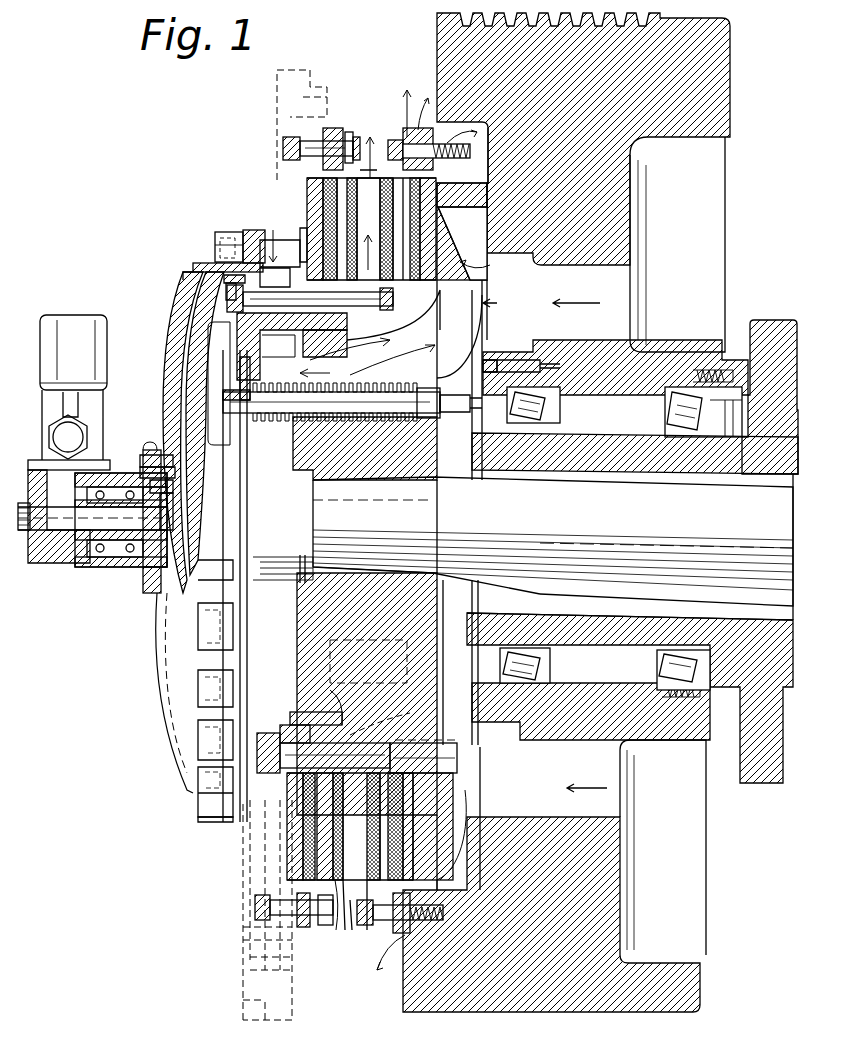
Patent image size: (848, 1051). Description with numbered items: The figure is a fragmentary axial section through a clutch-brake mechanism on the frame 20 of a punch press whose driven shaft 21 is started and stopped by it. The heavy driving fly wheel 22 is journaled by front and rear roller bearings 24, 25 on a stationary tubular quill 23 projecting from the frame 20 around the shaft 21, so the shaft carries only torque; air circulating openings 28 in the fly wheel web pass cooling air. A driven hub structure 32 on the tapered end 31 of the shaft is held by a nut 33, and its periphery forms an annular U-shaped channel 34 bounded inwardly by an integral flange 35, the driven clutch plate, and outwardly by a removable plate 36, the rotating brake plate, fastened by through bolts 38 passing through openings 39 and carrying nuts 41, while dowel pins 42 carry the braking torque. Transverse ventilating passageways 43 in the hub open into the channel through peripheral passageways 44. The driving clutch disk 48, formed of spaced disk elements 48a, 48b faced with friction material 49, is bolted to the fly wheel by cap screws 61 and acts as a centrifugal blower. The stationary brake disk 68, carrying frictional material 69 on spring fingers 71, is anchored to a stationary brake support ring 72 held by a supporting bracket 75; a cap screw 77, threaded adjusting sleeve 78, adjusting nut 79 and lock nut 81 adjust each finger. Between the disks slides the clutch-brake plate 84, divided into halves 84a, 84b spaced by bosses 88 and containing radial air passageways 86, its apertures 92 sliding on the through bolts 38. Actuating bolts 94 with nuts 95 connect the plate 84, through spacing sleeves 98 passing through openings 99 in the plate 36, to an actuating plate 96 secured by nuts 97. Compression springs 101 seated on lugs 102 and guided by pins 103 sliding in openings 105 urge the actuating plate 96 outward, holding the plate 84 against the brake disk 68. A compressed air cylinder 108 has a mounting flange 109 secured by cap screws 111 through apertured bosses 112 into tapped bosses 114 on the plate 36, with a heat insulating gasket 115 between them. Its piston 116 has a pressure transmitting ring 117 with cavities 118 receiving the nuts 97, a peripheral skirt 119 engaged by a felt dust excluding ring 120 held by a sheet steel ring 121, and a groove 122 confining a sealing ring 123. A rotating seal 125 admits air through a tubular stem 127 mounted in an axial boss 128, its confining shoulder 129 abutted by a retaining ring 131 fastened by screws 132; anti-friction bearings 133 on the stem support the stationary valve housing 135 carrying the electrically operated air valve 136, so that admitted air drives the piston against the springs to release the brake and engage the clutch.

The frame 20 is at (776, 320).
The driven shaft 21 is at (745, 553).
The driving fly wheel 22 is at (715, 78).
The stationary tubular quill 23 is at (633, 472).
The front roller bearing 24 is at (548, 422).
The rear roller bearing 25 is at (690, 438).
The air circulating openings 28 is at (615, 297).
The tapered end 31 is at (383, 530).
The driven hub structure 32 is at (315, 620).
The nut 33 is at (305, 560).
The annular U-shaped channel 34 is at (118, 567).
The annular flange 35 is at (470, 205).
The removable annular plate 36 is at (315, 185).
The through bolts 38 is at (323, 753).
The openings 39 is at (240, 802).
The nuts 41 is at (283, 735).
The dowel pins 42 is at (298, 720).
The transverse ventilating passageways 43 is at (443, 374).
The peripheral passageway 44 is at (313, 373).
The driving clutch disk 48 is at (440, 212).
The disk element 48a is at (405, 180).
The disk element 48b is at (440, 195).
The friction material 49 is at (446, 240).
The cap screws 61 is at (393, 140).
The stationary brake disk 68 is at (330, 195).
The frictional material 69 is at (350, 210).
The spring fingers 71 is at (357, 137).
The stationary brake support ring 72 is at (282, 115).
The supporting bracket 75 is at (243, 1000).
The cap screw 77 is at (290, 140).
The threaded adjusting sleeve 78 is at (349, 132).
The adjusting nut 79 is at (330, 128).
The lock nut 81 is at (375, 141).
The clutch-brake plate 84 is at (357, 372).
The plate half 84a is at (330, 690).
The plate half 84b is at (392, 710).
The radially extending passageways 86 is at (370, 229).
The bosses 88 is at (350, 922).
The apertures 92 is at (423, 758).
The actuating bolts 94 is at (270, 330).
The nuts 95 is at (396, 340).
The actuating plate 96 is at (240, 352).
The nuts 97 is at (230, 305).
The spacing sleeves 98 is at (262, 345).
The openings 99 is at (283, 248).
The compression springs 101 is at (263, 415).
The flanges or lugs 102 is at (445, 405).
The guide pins 103 is at (270, 422).
The openings 105 is at (235, 390).
The cylinder 108 is at (186, 352).
The peripheral mounting flange 109 is at (232, 232).
The cap screws 111 is at (218, 236).
The apertured bosses 112 is at (215, 245).
The tapped bosses 114 is at (300, 236).
The heat insulating gasket 115 is at (255, 230).
The piston 116 is at (165, 375).
The pressure transmitting ring 117 is at (208, 327).
The cavities 118 is at (227, 298).
The peripheral skirt 119 is at (262, 278).
The felt dust excluding ring 120 is at (193, 272).
The sheet steel ring 121 is at (195, 265).
The peripheral groove 122 is at (226, 292).
The sealing ring 123 is at (224, 280).
The rotating seal 125 is at (126, 448).
The tubular stem 127 is at (95, 567).
The axial boss 128 is at (173, 487).
The confining shoulder 129 is at (173, 512).
The retaining ring 131 is at (154, 455).
The screws 132 is at (175, 472).
The anti-friction bearings 133 is at (97, 505).
The valve housing 135 is at (62, 552).
The electrically operated air valve 136 is at (66, 318).